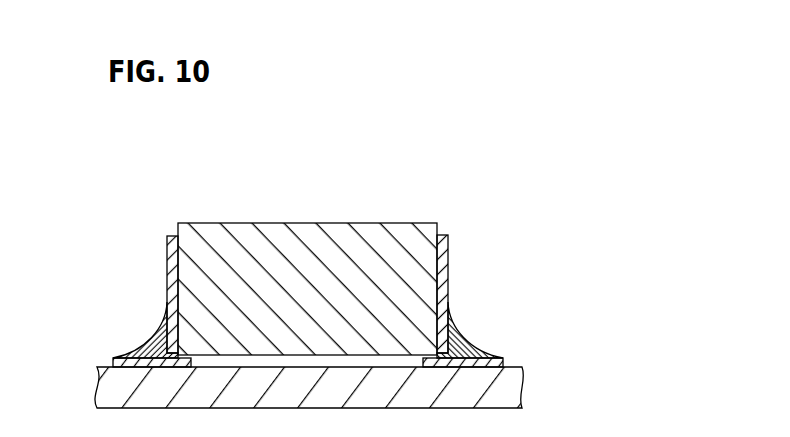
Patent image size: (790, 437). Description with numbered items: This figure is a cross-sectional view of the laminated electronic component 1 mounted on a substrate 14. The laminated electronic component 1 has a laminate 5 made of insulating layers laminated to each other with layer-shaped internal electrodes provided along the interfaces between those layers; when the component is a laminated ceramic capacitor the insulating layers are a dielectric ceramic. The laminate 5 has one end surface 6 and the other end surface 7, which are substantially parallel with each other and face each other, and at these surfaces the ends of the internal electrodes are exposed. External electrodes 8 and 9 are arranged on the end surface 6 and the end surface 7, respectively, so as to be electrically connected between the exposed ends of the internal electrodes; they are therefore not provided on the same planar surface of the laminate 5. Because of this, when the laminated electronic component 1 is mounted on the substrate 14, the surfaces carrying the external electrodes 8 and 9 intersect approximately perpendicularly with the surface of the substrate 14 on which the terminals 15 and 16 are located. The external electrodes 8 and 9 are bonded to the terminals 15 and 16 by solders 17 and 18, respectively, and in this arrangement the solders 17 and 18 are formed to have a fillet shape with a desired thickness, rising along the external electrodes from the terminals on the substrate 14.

The laminated electronic component 1 is at (309, 239).
The laminate 5 is at (402, 222).
The one end surface 6 is at (177, 268).
The other end surface 7 is at (443, 270).
The external electrode 8 is at (173, 247).
The external electrode 9 is at (443, 245).
The substrate 14 is at (519, 388).
The terminal 15 is at (113, 363).
The terminal 16 is at (505, 362).
The solder 17 is at (144, 341).
The solder 18 is at (462, 345).